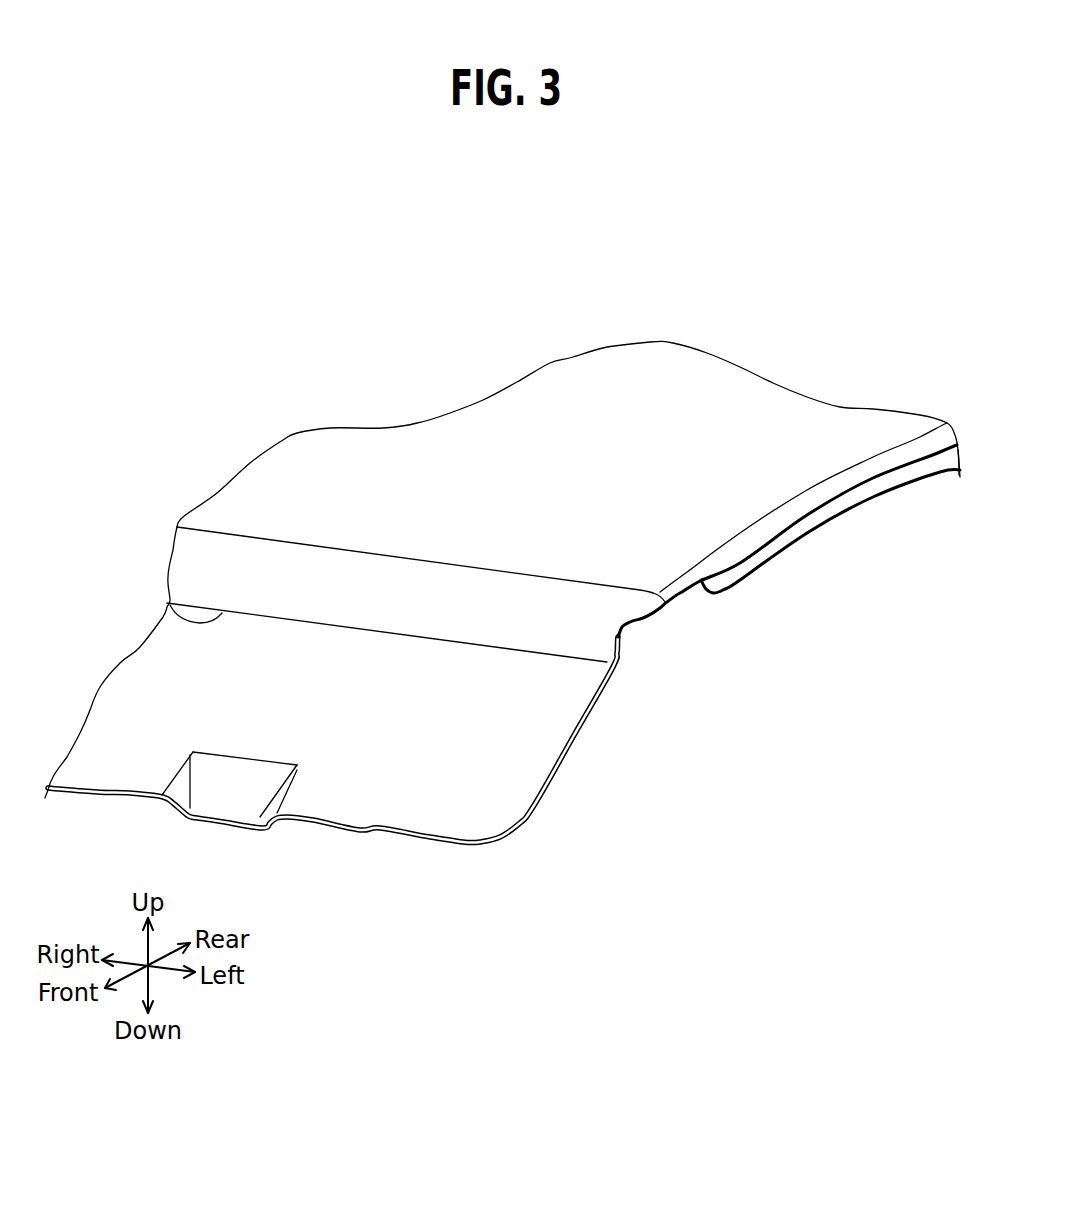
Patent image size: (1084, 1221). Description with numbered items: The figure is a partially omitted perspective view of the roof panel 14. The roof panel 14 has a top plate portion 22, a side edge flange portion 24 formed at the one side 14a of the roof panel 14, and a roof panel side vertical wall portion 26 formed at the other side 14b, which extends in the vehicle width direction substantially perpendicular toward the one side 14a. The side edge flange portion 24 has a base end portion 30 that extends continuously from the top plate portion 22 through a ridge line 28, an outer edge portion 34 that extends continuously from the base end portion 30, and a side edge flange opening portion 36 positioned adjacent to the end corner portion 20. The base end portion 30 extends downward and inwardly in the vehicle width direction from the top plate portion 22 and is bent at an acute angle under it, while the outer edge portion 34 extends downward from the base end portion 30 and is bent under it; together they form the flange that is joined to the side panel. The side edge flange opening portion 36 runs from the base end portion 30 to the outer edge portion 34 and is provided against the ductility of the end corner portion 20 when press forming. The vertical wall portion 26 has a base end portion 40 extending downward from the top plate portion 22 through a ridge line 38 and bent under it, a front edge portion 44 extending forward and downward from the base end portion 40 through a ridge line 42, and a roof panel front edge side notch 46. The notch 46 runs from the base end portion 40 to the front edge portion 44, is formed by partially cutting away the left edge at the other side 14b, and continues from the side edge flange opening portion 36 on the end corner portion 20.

The roof panel 14 is at (573, 413).
The one side of the roof panel 14a is at (783, 563).
The other side of the roof panel 14b is at (457, 648).
The end corner portion 20 is at (660, 577).
The top plate portion 22 is at (480, 443).
The side edge flange portion 24 is at (853, 597).
The roof panel side vertical wall portion 26 is at (425, 893).
The ridge line 28 is at (797, 497).
The base end portion 30 is at (853, 500).
The outer edge portion 34 is at (893, 457).
The side edge flange opening portion 36 is at (700, 592).
The ridge line 38 is at (287, 537).
The base end portion 40 is at (375, 590).
The ridge line 42 is at (170, 603).
The front edge portion 44 is at (480, 782).
The roof panel front edge side notch 46 is at (630, 637).